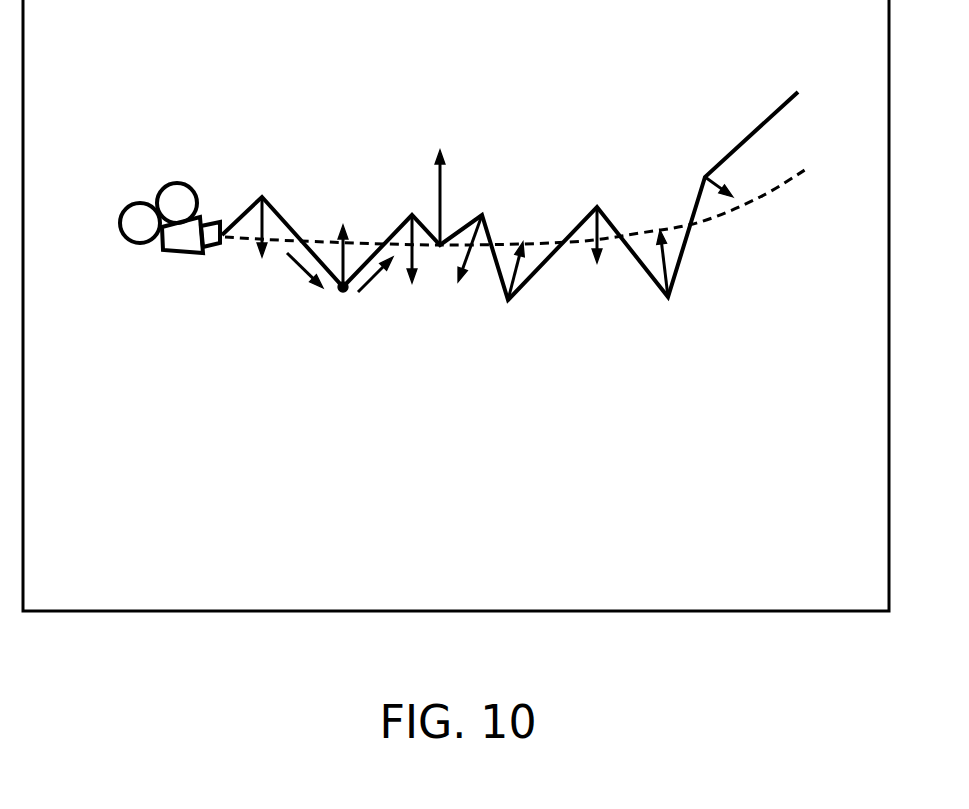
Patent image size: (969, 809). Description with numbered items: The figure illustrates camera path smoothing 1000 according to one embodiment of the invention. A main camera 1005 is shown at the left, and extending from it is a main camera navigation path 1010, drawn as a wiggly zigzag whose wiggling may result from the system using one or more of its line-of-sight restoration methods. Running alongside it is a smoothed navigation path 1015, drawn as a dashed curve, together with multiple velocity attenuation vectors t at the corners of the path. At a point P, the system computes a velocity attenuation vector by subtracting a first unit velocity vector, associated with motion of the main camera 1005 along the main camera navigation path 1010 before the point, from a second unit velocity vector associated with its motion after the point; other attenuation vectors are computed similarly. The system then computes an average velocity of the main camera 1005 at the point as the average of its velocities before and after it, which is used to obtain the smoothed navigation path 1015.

The camera path smoothing 1000 is at (416, 437).
The main camera 1005 is at (172, 183).
The main camera navigation path 1010 is at (748, 130).
The smoothed navigation path 1015 is at (772, 202).